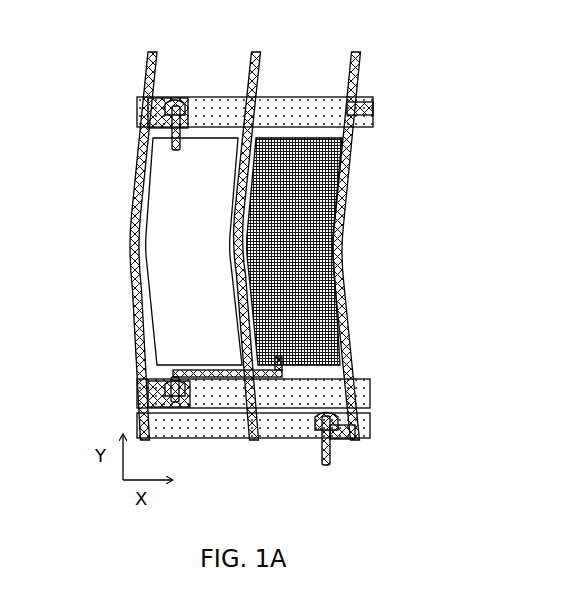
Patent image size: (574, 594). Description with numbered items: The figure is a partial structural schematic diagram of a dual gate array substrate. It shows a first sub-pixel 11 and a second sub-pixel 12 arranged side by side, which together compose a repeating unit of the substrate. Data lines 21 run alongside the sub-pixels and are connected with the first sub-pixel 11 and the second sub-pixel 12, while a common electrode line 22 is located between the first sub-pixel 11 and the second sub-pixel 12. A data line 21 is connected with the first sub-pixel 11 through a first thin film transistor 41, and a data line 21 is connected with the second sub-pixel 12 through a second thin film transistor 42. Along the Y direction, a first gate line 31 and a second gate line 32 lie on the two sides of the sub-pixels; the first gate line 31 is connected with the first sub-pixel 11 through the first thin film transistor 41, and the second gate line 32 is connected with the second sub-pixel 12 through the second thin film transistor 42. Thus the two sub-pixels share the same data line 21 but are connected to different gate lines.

The first sub-pixel 11 is at (175, 232).
The second sub-pixel 12 is at (300, 250).
The data line 21 is at (140, 168).
The common electrode line 22 is at (252, 83).
The first gate line 31 is at (337, 102).
The second gate line 32 is at (325, 397).
The first thin film transistor 41 is at (167, 102).
The second thin film transistor 42 is at (175, 405).